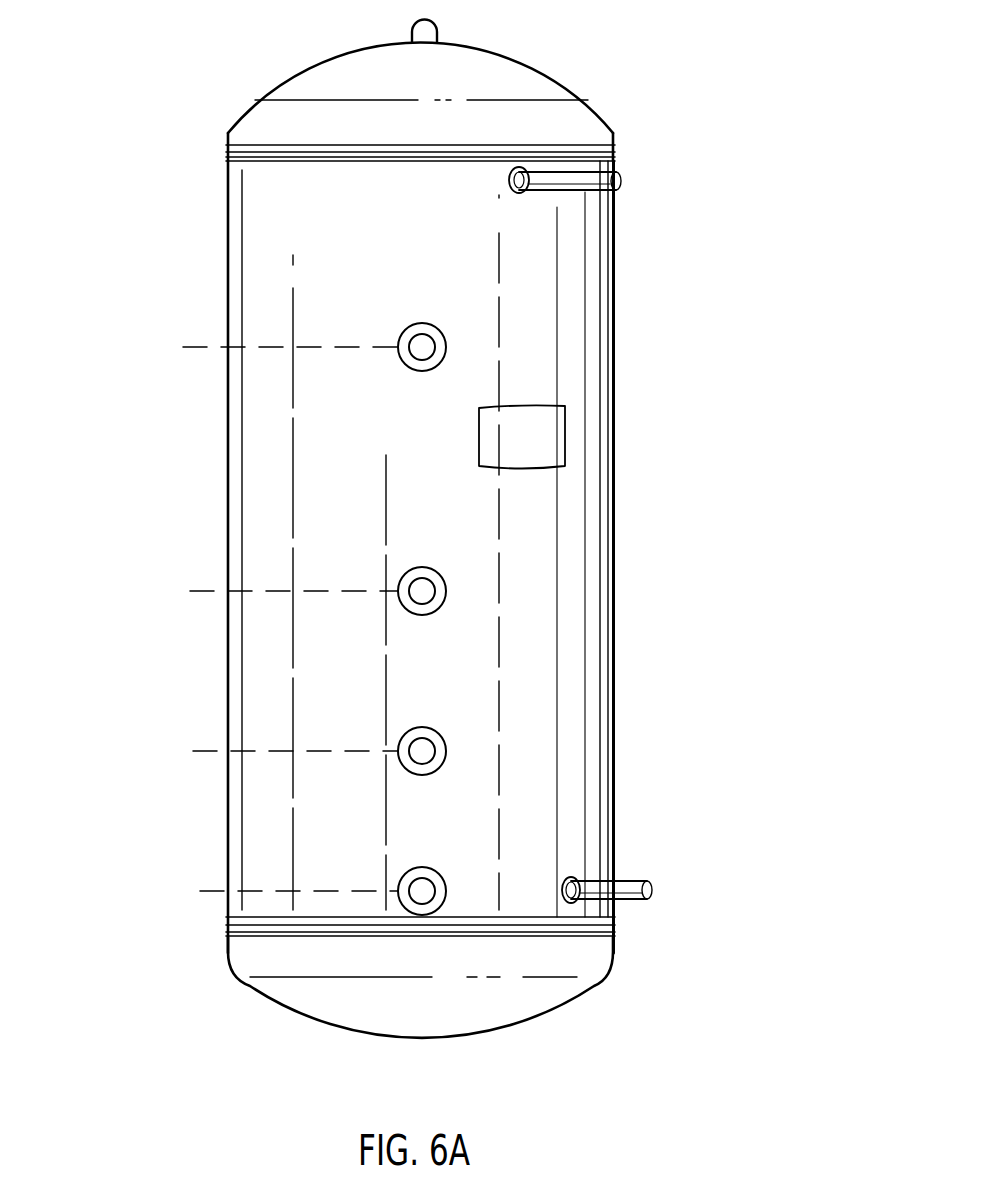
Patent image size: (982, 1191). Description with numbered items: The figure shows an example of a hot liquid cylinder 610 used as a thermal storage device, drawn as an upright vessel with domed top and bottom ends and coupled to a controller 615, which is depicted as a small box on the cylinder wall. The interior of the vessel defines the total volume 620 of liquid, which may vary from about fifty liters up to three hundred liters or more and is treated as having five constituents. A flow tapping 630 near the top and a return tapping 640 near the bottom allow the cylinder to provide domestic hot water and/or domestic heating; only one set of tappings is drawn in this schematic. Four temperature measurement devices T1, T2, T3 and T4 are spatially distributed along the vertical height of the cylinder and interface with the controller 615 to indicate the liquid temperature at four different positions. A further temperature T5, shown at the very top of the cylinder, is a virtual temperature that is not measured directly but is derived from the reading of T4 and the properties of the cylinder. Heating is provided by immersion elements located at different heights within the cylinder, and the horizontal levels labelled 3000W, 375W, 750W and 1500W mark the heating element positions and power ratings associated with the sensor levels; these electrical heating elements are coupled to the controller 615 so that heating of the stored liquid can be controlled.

The hot liquid cylinder 610 is at (636, 585).
The controller 615 is at (565, 440).
The volume 620 is at (582, 336).
The flow tapping 630 is at (570, 176).
The return tapping 640 is at (628, 882).
The temperature measurement device T1 is at (447, 891).
The temperature measurement device T2 is at (447, 751).
The temperature measurement device T3 is at (447, 591).
The temperature measurement device T4 is at (447, 347).
The virtual temperature T5 is at (441, 32).
The 3000 W heating element level 3000W is at (251, 347).
The 375 W heating element level 375W is at (260, 591).
The 750 W heating element level 750W is at (261, 751).
The 1500 W heating element level 1500W is at (261, 891).